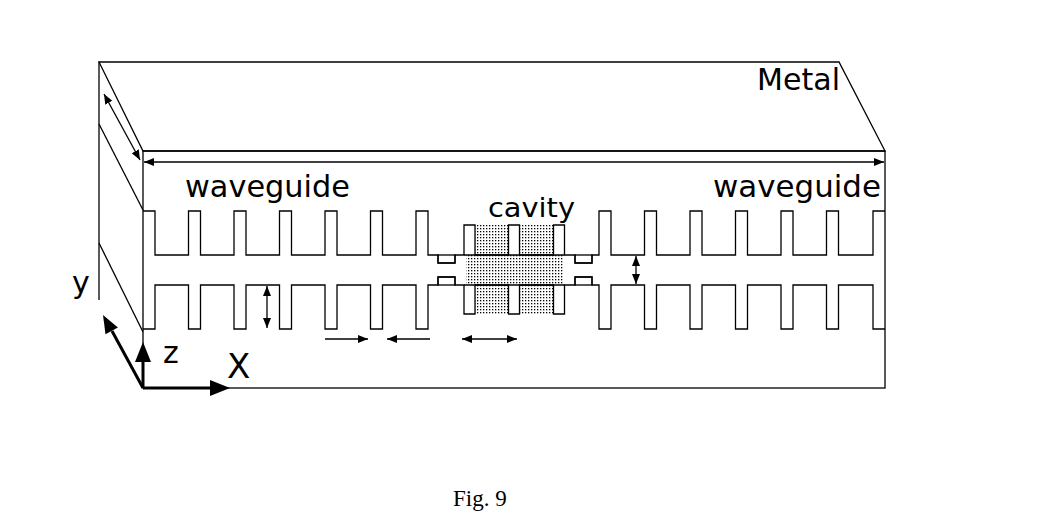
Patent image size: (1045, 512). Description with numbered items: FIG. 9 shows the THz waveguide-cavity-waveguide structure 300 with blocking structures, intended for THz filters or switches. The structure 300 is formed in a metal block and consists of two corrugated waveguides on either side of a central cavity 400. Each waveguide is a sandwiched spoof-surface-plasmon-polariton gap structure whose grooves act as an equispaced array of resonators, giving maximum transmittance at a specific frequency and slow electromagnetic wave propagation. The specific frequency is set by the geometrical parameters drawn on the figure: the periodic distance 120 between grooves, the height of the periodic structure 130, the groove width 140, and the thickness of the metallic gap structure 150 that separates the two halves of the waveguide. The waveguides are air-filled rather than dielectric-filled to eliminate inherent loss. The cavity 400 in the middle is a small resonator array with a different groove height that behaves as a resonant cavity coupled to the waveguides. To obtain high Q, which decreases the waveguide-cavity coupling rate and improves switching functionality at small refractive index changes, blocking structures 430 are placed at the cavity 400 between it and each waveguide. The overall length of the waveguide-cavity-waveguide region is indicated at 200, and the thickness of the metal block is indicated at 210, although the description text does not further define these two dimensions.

The periodic distance d 120 is at (487, 342).
The height of periodic structure h1 130 is at (270, 310).
The groove width a 140 is at (345, 342).
The thickness of metallic gap structure t 150 is at (638, 272).
The waveguide length 200 is at (545, 163).
The metal block thickness 210 is at (118, 120).
The waveguide-cavity-waveguide structure 300 is at (543, 122).
The cavity 400 is at (516, 267).
The blocking structures 430 is at (445, 287).